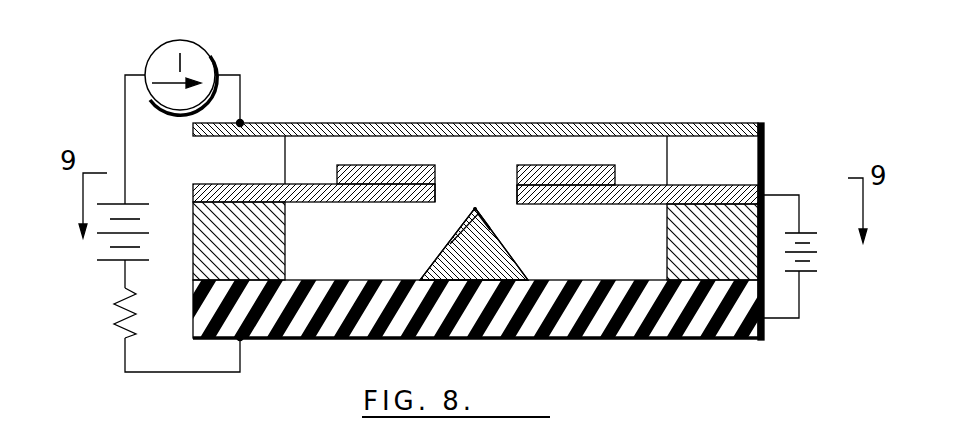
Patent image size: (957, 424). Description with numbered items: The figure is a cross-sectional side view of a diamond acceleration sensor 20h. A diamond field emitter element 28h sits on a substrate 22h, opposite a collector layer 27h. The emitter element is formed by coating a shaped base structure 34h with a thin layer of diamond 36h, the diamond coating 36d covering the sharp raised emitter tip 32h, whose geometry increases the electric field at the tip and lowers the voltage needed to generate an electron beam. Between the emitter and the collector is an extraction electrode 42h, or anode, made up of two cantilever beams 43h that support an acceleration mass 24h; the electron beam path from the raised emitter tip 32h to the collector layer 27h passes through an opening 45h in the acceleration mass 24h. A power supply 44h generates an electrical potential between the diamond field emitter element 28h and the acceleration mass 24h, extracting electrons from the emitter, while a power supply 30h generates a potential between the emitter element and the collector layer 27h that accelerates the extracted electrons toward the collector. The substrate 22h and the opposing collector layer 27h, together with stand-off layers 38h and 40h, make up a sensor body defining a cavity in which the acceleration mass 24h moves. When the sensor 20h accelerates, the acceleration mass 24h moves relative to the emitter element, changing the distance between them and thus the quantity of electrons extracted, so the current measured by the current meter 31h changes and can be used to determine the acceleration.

The acceleration sensor 20h is at (410, 90).
The substrate 22h is at (473, 323).
The acceleration mass 24h is at (501, 138).
The collector layer 27h is at (475, 104).
The diamond field emitter element 28h is at (487, 215).
The power supply 30h is at (80, 294).
The current meter 31h is at (138, 66).
The raised emitter tip 32h is at (476, 206).
The base structure 34h is at (440, 264).
The thin layer of diamond 36d is at (467, 205).
The thin layer of diamond 36h is at (505, 264).
The stand-off layer 38h is at (740, 167).
The stand-off layer 40h is at (523, 261).
The extraction electrode 42h is at (800, 231).
The cantilever beams 43h is at (475, 217).
The power supply 44h is at (842, 263).
The opening 45h is at (465, 183).